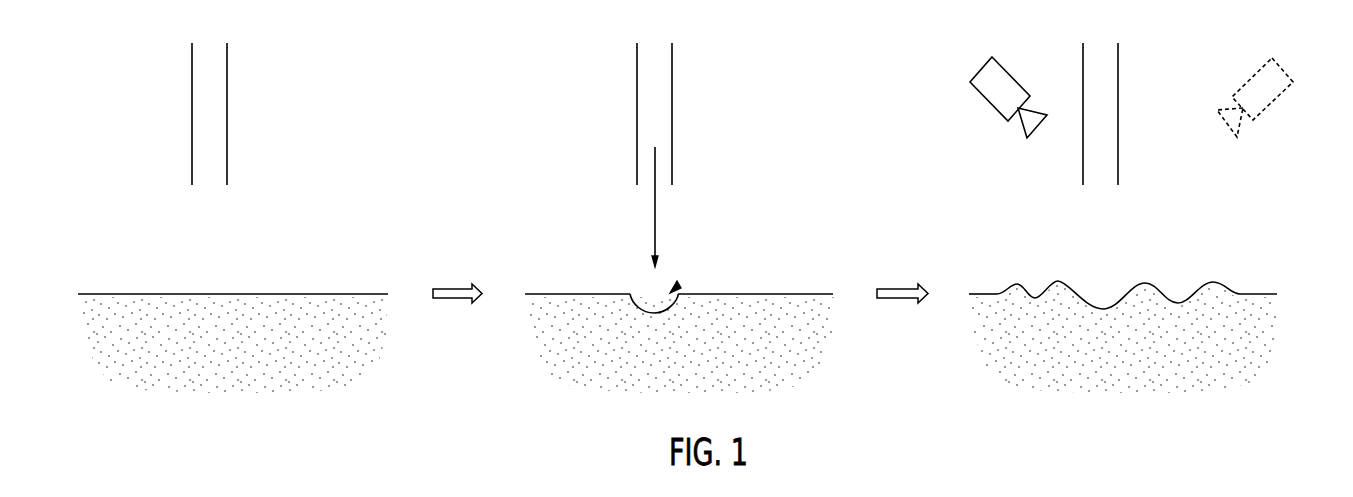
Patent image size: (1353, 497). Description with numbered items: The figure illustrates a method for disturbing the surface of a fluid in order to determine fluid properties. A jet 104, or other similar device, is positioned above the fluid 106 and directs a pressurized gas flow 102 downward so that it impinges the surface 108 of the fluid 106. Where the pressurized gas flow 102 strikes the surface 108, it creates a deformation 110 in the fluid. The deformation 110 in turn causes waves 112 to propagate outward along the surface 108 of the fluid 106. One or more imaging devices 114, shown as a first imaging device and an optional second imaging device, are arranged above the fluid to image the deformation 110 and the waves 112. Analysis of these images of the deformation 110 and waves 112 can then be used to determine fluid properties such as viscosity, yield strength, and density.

The pressurized gas flow 102 is at (655, 220).
The jet 104 is at (227, 73).
The fluid 106 is at (270, 364).
The surface 108 is at (360, 294).
The deformation 110 is at (676, 285).
The waves 112 is at (1076, 275).
The imaging devices 114 is at (978, 95).